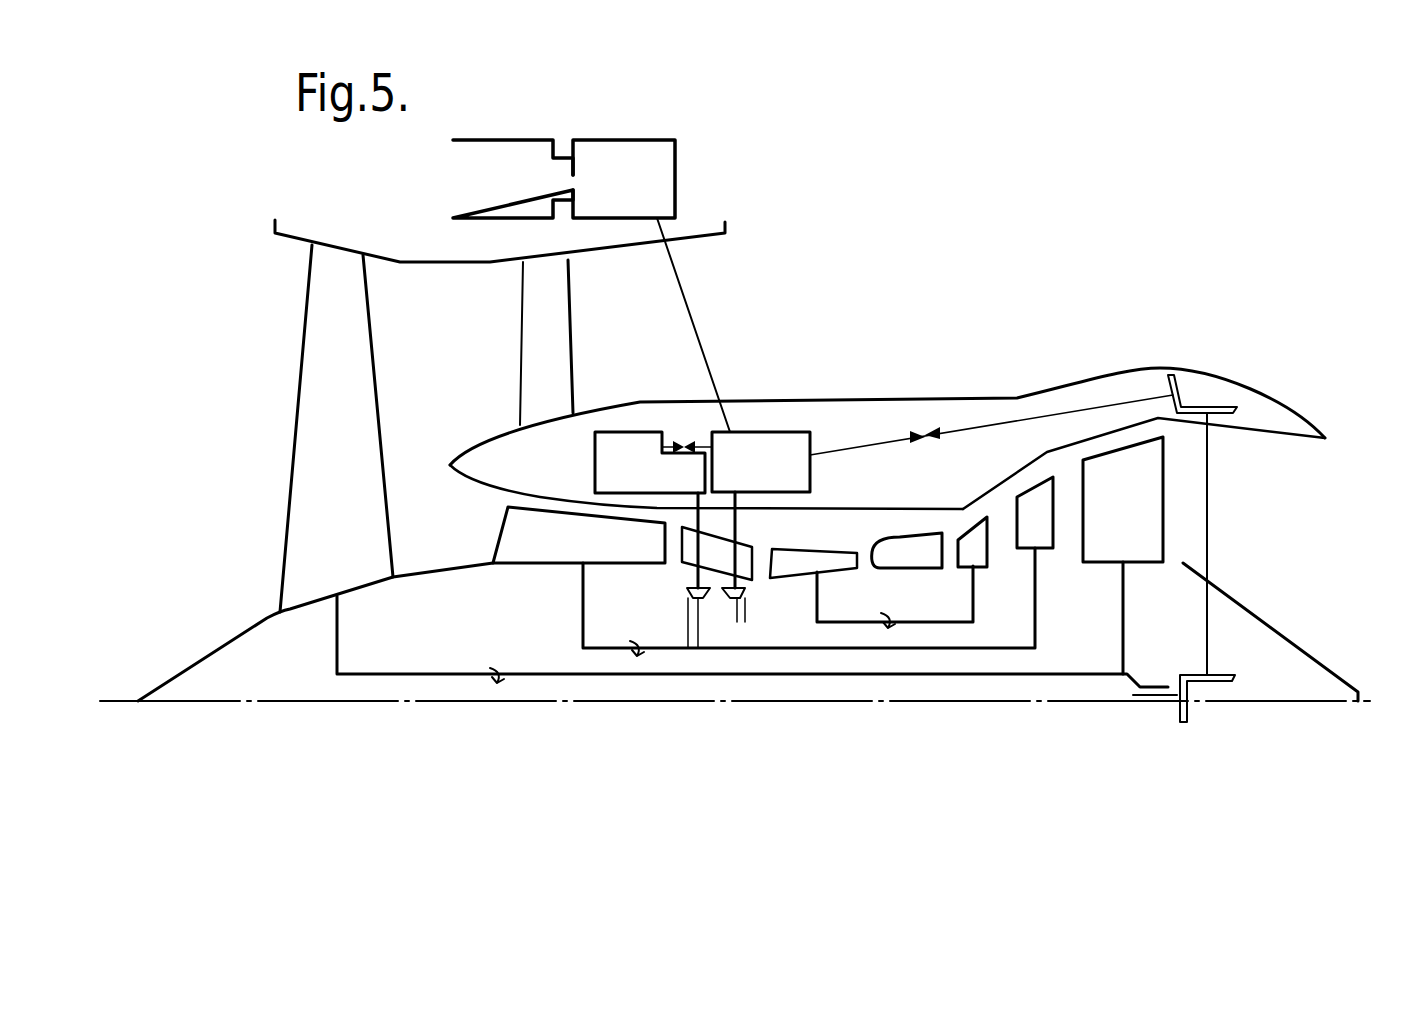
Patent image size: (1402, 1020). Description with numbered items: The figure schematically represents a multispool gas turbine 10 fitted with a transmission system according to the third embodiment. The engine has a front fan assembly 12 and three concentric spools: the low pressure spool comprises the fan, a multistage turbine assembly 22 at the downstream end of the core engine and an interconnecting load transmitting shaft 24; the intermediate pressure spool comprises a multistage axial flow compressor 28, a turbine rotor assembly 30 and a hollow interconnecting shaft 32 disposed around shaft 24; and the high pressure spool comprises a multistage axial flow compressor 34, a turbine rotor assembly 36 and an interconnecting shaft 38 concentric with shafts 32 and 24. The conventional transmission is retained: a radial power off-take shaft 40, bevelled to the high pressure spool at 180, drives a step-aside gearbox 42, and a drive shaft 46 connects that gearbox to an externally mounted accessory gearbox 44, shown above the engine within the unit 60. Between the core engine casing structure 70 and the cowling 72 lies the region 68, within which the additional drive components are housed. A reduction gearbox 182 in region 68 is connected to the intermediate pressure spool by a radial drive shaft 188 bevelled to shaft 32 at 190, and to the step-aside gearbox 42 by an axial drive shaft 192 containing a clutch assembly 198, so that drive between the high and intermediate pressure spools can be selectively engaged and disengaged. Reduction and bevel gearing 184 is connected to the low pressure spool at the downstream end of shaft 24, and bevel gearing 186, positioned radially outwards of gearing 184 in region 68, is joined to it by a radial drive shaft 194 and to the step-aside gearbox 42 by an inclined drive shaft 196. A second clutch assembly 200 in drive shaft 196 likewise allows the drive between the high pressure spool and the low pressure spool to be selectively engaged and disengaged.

The multispool gas turbine 10 is at (903, 218).
The front fan assembly 12 is at (315, 372).
The multistage turbine assembly 22 is at (1148, 565).
The interconnecting load transmitting shaft 24 is at (422, 670).
The multistage axial flow compressor 28 is at (562, 553).
The turbine rotor assembly 30 is at (1053, 545).
The hollow interconnecting shaft 32 is at (752, 652).
The multistage axial flow compressor 34 is at (817, 563).
The turbine rotor assembly 36 is at (988, 563).
The interconnecting shaft 38 is at (947, 627).
The radial power off-take shaft 40 is at (735, 533).
The step-aside gearbox 42 is at (778, 433).
The accessory gearbox 44 is at (652, 162).
The drive shaft 46 is at (700, 337).
The generator unit 60 is at (688, 119).
The region 68 is at (905, 489).
The core engine casing structure 70 is at (952, 505).
The cowling 72 is at (1125, 370).
The bevel connection 180 is at (747, 610).
The reduction gearbox 182 is at (595, 450).
The reduction and bevel gearing 184 is at (1222, 666).
The bevel gearing 186 is at (1197, 396).
The radial drive shaft 188 is at (698, 550).
The bevel connection 190 is at (687, 610).
The axial drive shaft 192 is at (668, 444).
The radial drive shaft 194 is at (1207, 528).
The inclined drive shaft 196 is at (985, 427).
The clutch assembly 198 is at (682, 444).
The second clutch assembly 200 is at (917, 430).